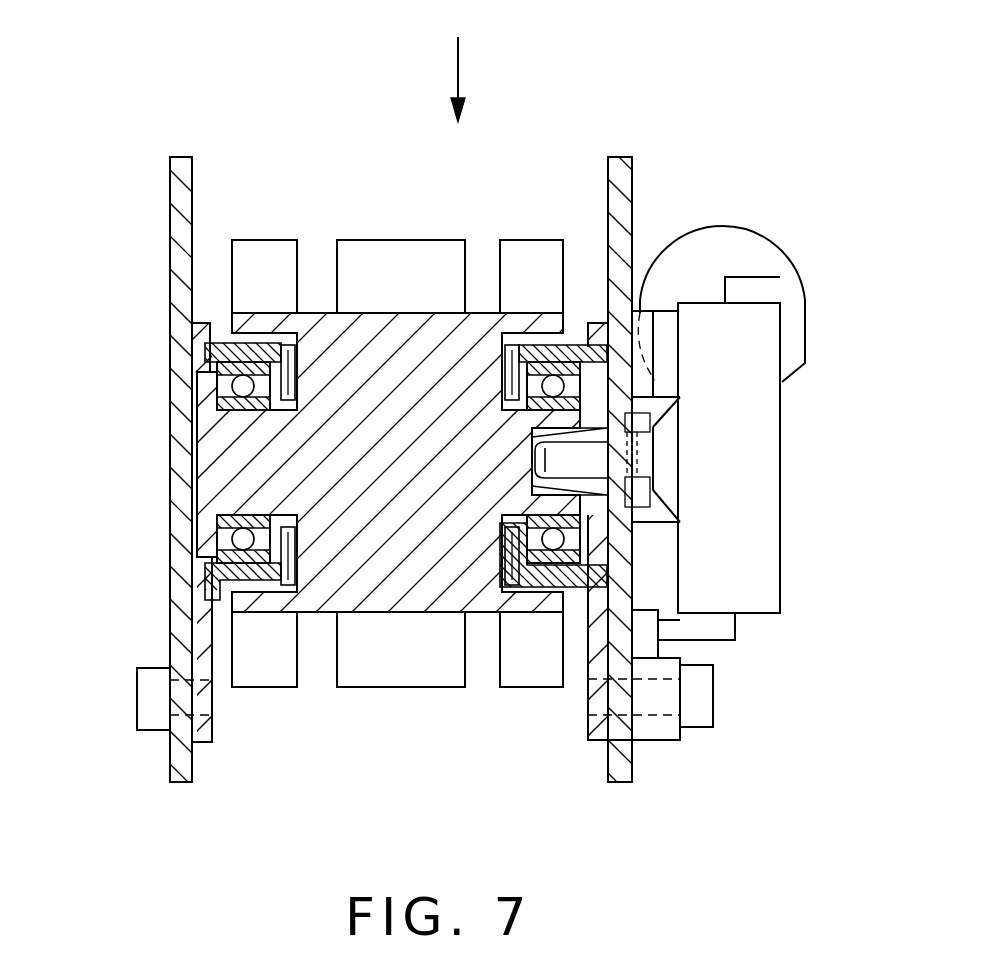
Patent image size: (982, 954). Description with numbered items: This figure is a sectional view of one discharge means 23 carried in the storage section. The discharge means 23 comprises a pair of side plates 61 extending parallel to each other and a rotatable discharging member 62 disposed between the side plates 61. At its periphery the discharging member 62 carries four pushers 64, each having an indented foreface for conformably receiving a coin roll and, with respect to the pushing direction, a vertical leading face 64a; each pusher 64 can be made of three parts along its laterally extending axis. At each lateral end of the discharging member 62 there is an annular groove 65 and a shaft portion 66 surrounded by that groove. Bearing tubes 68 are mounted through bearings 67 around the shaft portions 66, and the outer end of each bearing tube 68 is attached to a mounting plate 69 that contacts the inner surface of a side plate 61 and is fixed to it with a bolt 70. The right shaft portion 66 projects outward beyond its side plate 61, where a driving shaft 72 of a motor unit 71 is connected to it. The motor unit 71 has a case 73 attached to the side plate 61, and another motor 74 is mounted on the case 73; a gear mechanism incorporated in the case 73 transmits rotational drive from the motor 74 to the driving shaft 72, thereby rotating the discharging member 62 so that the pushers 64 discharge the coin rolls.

The discharge means 23 is at (478, 30).
The side plate 61 is at (180, 175).
The discharging member 62 is at (442, 240).
The pusher 64 is at (385, 240).
The vertical leading face 64a is at (357, 270).
The annular groove 65 is at (250, 335).
The shaft portion 66 is at (212, 447).
The bearing 67 is at (215, 530).
The bearing tube 68 is at (205, 562).
The mounting plate 69 is at (200, 626).
The bolt 70 is at (150, 692).
The motor unit 71 is at (782, 500).
The driving shaft 72 is at (610, 463).
The case 73 is at (782, 577).
The motor 74 is at (748, 240).